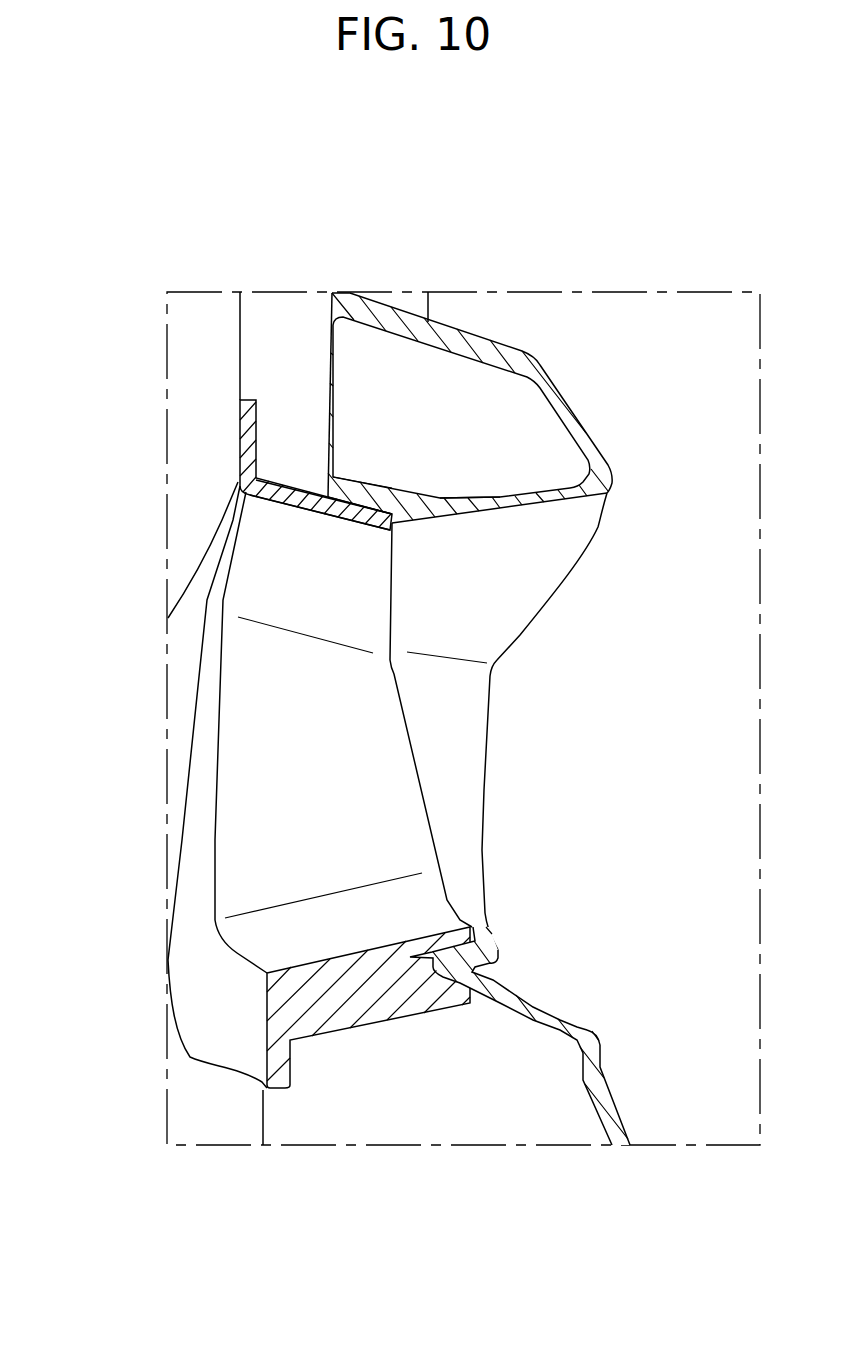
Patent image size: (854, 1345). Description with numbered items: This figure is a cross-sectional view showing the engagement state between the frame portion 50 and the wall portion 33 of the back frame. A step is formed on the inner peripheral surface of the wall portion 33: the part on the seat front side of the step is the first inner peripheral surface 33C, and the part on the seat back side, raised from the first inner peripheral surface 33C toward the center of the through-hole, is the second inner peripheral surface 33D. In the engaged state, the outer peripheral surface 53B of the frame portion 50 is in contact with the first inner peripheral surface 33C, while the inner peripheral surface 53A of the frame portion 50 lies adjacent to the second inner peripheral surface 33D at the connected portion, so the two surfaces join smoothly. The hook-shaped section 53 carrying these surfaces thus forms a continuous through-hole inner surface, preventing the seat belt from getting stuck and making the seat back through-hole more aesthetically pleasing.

The wall portion 33 is at (473, 783).
The first inner peripheral surface 33C is at (369, 493).
The second inner peripheral surface 33D is at (499, 503).
The frame portion 50 is at (238, 873).
The hook portion 53 is at (268, 513).
The inner peripheral surface 53A is at (316, 518).
The outer peripheral surface 53B is at (302, 493).